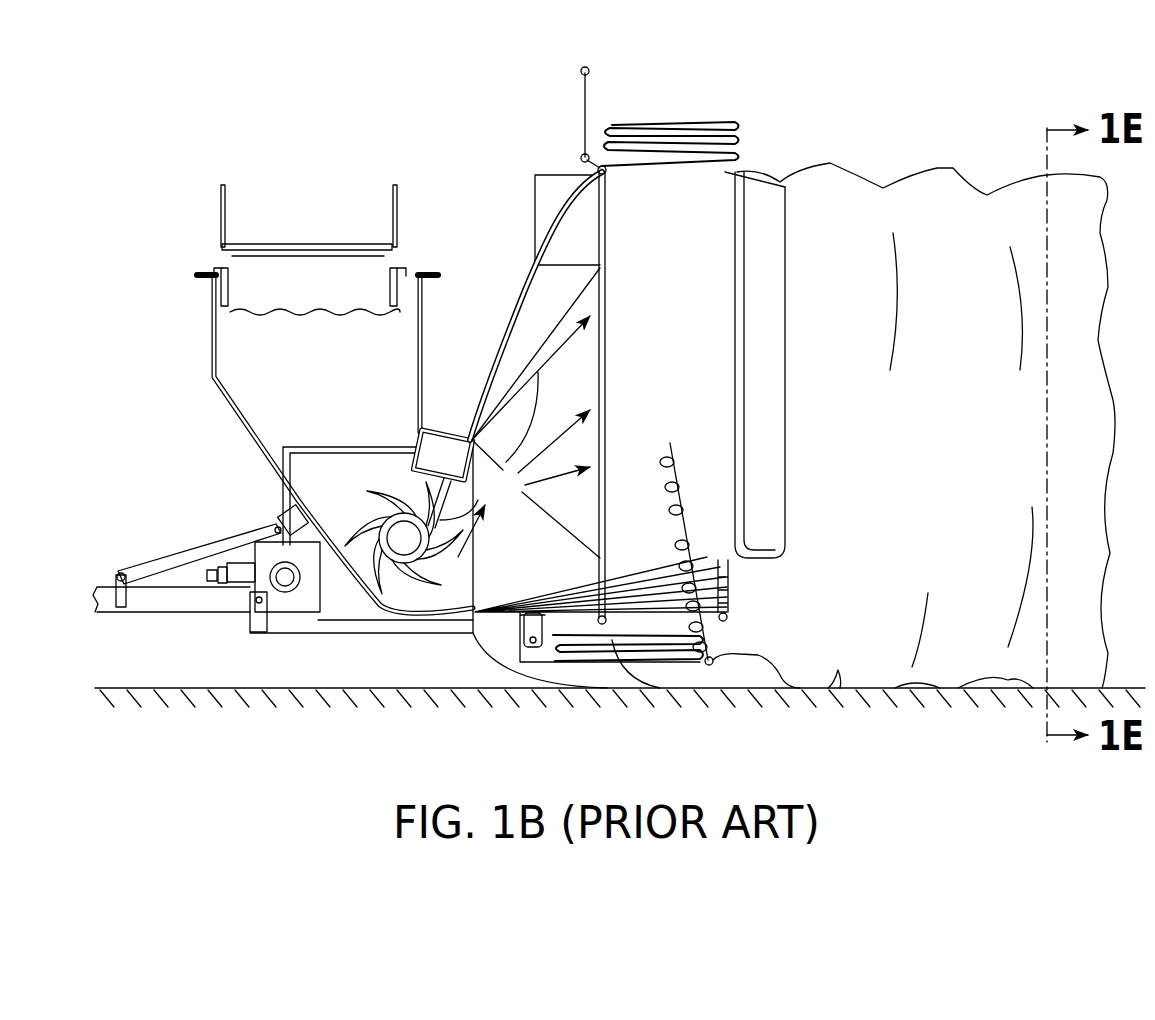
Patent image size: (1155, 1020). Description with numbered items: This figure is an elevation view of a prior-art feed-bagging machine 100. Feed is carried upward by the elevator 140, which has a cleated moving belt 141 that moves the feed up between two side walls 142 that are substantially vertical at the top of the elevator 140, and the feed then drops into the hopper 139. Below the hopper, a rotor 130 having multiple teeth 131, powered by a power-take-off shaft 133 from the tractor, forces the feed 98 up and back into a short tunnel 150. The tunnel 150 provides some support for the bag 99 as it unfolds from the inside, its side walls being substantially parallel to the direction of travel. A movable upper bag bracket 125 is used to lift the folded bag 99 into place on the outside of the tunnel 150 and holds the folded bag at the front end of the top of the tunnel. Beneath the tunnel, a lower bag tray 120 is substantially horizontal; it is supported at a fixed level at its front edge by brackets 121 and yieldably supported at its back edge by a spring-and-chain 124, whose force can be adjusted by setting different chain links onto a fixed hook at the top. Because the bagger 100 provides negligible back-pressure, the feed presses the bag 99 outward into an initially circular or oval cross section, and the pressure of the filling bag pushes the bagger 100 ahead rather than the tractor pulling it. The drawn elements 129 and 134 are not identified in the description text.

The feed 98 is at (525, 509).
The bag 99 is at (698, 132).
The feed bagging machine 100 is at (522, 240).
The lower bag tray 120 is at (706, 668).
The brackets 121 is at (491, 639).
The spring-and-chain 124 is at (671, 516).
The movable upper bag bracket 125 is at (582, 105).
The wheel skirt 129 is at (515, 673).
The rotor 130 is at (354, 498).
The teeth 131 is at (399, 493).
The power-take-off shaft 133 is at (205, 566).
The lever mount 134 is at (132, 561).
The hopper 139 is at (418, 318).
The elevator 140 is at (220, 217).
The cleated moving belt 141 is at (280, 247).
The side walls 142 is at (224, 190).
The short tunnel 150 is at (769, 185).